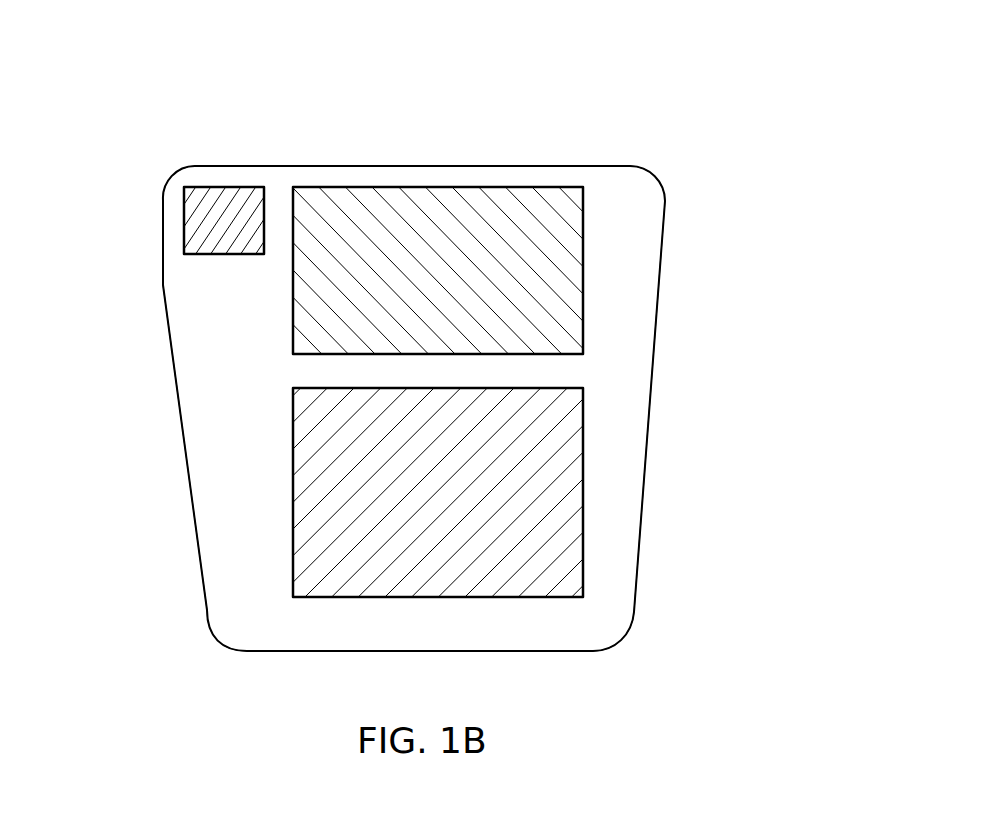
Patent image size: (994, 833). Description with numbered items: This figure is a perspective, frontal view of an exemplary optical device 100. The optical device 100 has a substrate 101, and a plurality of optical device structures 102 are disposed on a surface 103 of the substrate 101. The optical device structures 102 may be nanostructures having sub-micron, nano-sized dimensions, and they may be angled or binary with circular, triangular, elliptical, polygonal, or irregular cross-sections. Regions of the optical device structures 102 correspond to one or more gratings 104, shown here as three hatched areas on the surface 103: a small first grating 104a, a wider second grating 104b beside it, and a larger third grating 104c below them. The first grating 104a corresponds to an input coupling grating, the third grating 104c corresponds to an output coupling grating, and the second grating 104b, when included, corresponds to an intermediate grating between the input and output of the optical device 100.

The optical device 100 is at (715, 130).
The substrate 101 is at (630, 405).
The optical device structures 102 is at (583, 333).
The surface 103 is at (638, 263).
The gratings 104 is at (553, 187).
The first grating 104a is at (225, 187).
The second grating 104b is at (432, 187).
The third grating 104c is at (583, 492).